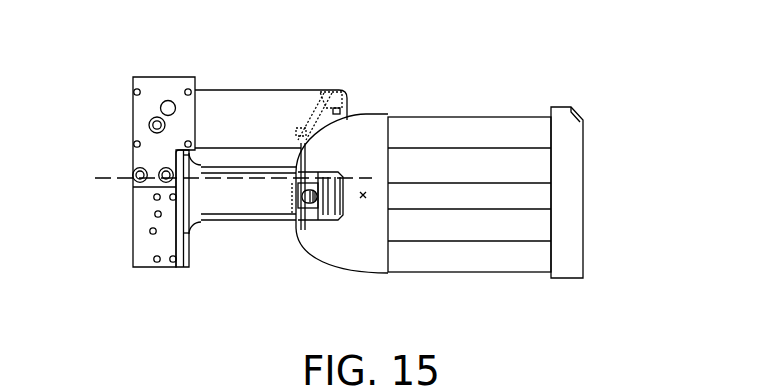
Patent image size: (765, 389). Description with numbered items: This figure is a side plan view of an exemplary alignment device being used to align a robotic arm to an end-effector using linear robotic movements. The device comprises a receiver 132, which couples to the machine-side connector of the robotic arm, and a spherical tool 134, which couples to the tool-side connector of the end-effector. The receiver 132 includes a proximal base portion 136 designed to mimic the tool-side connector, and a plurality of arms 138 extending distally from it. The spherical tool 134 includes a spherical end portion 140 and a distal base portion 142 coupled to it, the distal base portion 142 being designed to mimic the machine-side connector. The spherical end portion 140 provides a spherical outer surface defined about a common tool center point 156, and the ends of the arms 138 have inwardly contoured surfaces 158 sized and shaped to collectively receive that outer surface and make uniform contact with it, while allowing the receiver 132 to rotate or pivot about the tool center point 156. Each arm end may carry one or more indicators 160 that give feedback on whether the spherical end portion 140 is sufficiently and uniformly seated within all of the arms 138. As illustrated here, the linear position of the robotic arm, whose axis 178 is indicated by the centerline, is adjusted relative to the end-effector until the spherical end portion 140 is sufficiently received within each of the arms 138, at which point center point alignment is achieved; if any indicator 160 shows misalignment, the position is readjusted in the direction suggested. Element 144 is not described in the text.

The receiver 132 is at (247, 70).
The spherical tool 134 is at (501, 60).
The proximal base portion 136 is at (143, 115).
The arms 138 is at (213, 100).
The spherical end portion 140 is at (357, 248).
The distal base portion 142 is at (567, 226).
The cylinder body 144 is at (533, 166).
The tool center point 156 is at (368, 197).
The contoured surfaces 158 is at (335, 126).
The indicators 160 is at (300, 92).
The axis 178 is at (112, 178).